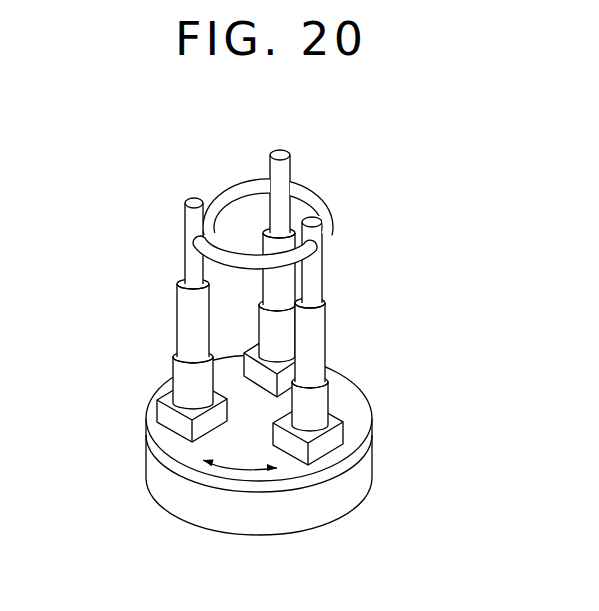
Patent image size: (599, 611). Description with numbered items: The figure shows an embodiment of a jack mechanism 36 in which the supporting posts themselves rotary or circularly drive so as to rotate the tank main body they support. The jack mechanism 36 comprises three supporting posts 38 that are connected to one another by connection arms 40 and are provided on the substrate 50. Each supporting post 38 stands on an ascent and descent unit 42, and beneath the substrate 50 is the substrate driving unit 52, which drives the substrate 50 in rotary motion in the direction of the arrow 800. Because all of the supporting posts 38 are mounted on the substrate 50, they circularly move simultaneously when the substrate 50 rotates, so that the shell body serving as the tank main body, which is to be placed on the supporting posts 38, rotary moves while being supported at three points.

The jack mechanism 36 is at (256, 286).
The supporting posts 38 is at (185, 253).
The connection arms 40 is at (243, 177).
The ascent and descent unit 42 is at (158, 415).
The substrate 50 is at (341, 378).
The substrate driving unit 52 is at (343, 503).
The arrow 800 is at (232, 467).